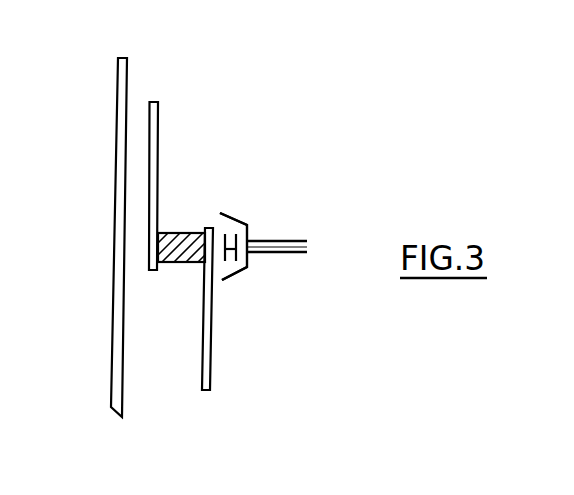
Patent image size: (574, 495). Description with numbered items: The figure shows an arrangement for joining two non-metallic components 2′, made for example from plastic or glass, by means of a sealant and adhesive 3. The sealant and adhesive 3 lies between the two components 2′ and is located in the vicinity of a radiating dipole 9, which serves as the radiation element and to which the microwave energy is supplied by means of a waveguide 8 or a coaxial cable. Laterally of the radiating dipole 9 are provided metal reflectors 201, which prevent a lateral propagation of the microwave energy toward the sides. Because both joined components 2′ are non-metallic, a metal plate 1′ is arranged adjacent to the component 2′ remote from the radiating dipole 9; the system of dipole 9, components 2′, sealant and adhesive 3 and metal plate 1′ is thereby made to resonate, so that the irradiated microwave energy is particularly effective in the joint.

The metal plate 1′ is at (118, 136).
The component 2′ is at (158, 162).
The sealant and adhesive 3 is at (187, 263).
The radiating dipole 9 is at (240, 221).
The metal reflectors 201 is at (233, 224).
The waveguide 8 is at (295, 244).